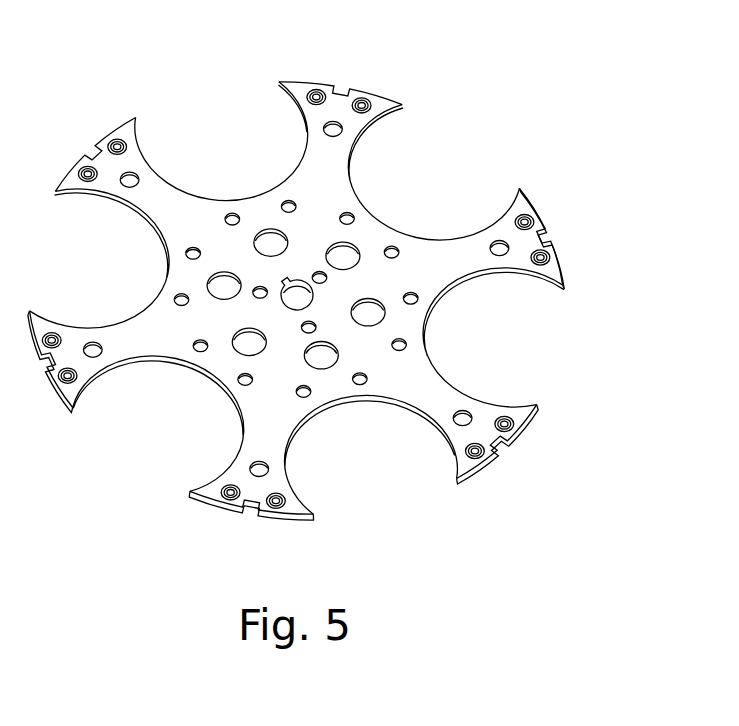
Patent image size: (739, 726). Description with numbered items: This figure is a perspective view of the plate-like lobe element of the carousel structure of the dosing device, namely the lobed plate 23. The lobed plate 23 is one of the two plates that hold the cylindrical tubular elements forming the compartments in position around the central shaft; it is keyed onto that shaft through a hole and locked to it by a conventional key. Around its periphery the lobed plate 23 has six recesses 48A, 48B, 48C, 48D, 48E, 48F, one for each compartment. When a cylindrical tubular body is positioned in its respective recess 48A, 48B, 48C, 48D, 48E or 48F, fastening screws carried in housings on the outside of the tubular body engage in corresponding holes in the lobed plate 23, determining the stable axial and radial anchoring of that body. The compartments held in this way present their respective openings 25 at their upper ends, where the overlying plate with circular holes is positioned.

The lobed plate 23 is at (497, 270).
The openings 25 is at (297, 296).
The recess 48A is at (105, 272).
The recess 48B is at (258, 137).
The recess 48C is at (392, 177).
The recess 48D is at (473, 403).
The recess 48E is at (363, 453).
The recess 48F is at (168, 425).